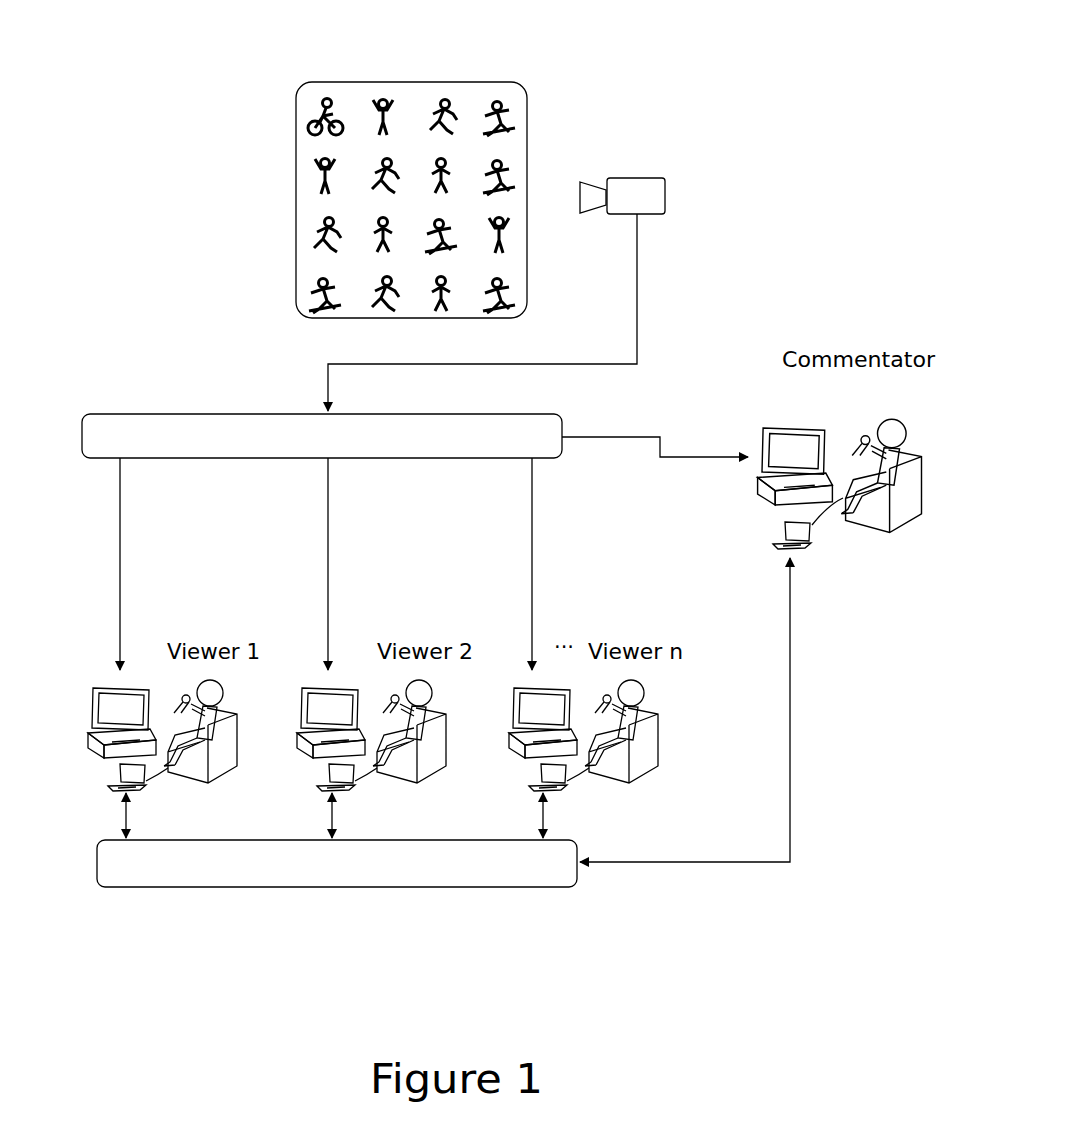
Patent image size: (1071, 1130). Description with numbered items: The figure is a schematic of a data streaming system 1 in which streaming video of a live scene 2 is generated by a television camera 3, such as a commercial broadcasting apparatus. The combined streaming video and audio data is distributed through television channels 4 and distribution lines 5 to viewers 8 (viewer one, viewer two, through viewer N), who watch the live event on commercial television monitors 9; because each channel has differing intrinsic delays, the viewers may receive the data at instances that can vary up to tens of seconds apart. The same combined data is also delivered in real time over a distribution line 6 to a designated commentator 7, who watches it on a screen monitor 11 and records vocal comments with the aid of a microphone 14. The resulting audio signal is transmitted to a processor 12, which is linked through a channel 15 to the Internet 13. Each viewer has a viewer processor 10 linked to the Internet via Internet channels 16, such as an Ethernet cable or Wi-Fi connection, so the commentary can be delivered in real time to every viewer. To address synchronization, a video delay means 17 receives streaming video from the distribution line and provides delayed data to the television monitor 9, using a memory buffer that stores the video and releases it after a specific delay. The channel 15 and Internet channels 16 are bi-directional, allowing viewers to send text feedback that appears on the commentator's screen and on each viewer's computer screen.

The system 1 is at (738, 38).
The live scene 2 is at (304, 150).
The television camera 3 is at (637, 178).
The television channels 4 is at (121, 432).
The distribution lines 5 is at (122, 548).
The distribution line 6 is at (712, 455).
The commentator 7 is at (910, 437).
The viewers 8 is at (222, 692).
The television monitor 9 is at (108, 705).
The viewer processor 10 is at (143, 788).
The screen monitor 11 is at (800, 448).
The processor 12 is at (796, 549).
The Internet 13 is at (486, 853).
The microphone 14 is at (862, 450).
The channel 15 is at (792, 660).
The Internet channels 16 is at (344, 812).
The video delay means 17 is at (88, 746).